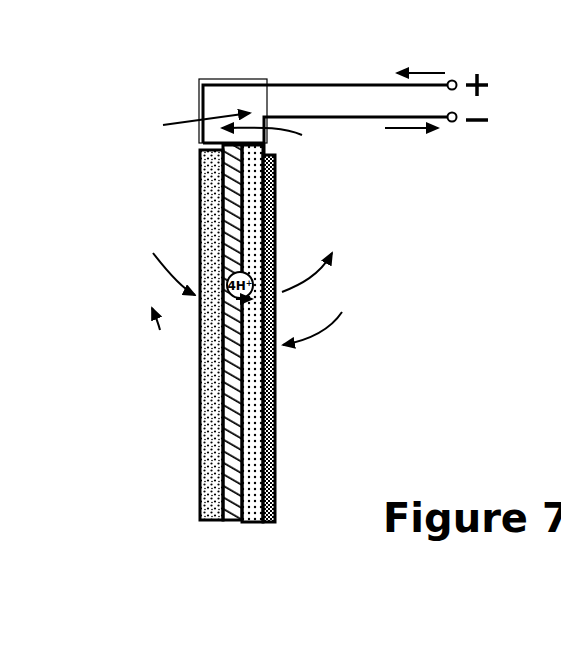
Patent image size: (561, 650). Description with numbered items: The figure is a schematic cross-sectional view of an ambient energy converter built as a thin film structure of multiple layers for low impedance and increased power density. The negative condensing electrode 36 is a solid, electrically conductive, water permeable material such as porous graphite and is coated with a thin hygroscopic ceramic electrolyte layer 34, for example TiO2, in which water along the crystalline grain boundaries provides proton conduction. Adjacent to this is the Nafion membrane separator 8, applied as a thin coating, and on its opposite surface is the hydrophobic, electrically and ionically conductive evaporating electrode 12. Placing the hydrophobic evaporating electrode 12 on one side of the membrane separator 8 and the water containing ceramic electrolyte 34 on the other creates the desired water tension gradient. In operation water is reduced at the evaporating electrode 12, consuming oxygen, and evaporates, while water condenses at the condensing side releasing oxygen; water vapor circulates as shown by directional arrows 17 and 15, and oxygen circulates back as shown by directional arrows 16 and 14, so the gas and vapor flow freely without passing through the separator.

The membrane separator 8 is at (230, 517).
The evaporating electrode 12 is at (212, 415).
The directional arrow 14 is at (232, 112).
The directional arrow 15 is at (325, 272).
The directional arrow 16 is at (300, 132).
The directional arrow 17 is at (167, 273).
The electrolyte layer 34 is at (252, 522).
The negative condensing electrode 36 is at (273, 410).